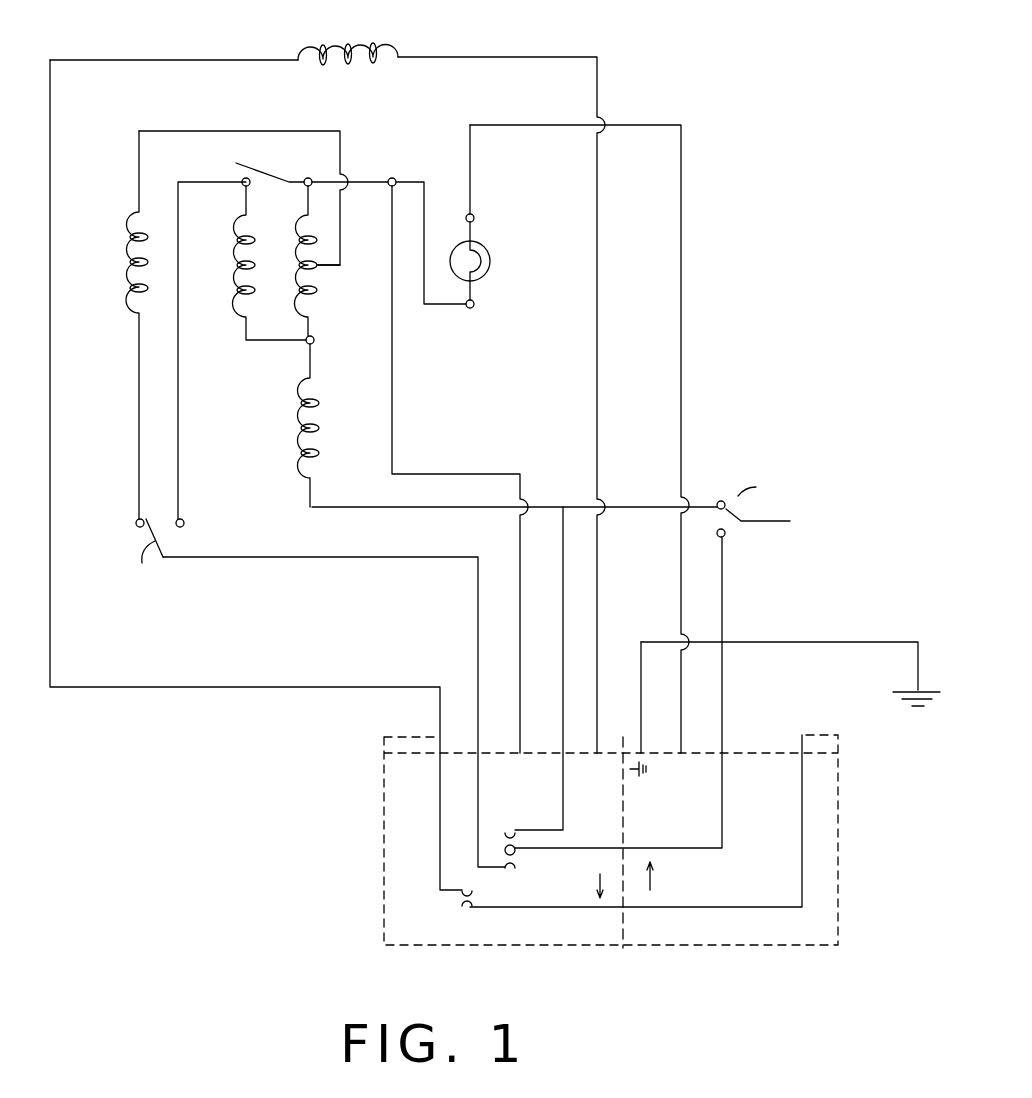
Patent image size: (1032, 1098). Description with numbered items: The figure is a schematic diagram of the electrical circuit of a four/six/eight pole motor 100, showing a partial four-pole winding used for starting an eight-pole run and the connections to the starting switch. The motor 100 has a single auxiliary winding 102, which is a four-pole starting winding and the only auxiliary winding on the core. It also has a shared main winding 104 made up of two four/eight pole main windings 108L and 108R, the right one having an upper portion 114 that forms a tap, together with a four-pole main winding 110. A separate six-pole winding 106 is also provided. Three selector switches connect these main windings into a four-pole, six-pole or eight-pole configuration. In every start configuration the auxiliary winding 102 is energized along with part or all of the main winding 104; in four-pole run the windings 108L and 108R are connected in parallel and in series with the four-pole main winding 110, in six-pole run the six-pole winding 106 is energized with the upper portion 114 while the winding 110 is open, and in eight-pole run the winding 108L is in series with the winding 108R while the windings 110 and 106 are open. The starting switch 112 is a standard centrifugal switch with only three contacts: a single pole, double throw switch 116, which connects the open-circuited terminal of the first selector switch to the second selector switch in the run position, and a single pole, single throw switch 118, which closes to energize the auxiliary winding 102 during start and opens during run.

The 4/6/8 pole motor 100 is at (520, 401).
The auxiliary winding 102 is at (396, 46).
The shared main winding 104 is at (406, 121).
The 6-pole winding 106 is at (128, 238).
The 4/8 pole main winding 108L is at (241, 219).
The 4/8 pole main winding 108R is at (336, 265).
The 4-pole main winding 110 is at (318, 398).
The starting switch 112 is at (838, 786).
The upper portion of 4/8P main winding 114 is at (306, 239).
The single pole, double throw switch 116 is at (540, 865).
The single pole, single throw switch 118 is at (443, 918).